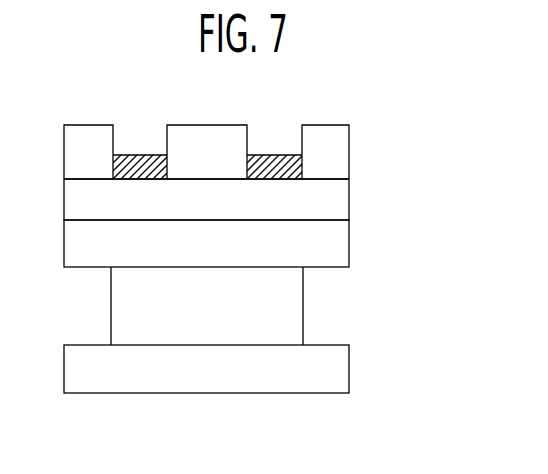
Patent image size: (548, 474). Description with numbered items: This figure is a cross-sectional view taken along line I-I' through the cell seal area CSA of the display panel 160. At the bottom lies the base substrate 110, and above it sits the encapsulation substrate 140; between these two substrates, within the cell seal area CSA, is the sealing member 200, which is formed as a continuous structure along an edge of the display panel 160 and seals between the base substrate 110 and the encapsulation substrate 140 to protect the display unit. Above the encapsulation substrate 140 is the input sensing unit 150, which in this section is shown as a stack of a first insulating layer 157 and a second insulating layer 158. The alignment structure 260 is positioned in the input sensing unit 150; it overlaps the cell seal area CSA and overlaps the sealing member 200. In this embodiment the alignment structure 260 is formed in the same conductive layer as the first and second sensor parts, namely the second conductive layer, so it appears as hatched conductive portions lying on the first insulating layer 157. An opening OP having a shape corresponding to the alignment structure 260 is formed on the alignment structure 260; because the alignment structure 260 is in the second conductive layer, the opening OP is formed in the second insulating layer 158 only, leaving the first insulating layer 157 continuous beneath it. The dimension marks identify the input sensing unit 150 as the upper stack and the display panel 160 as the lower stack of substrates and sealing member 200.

The base substrate 110 is at (349, 363).
The encapsulation substrate 140 is at (349, 251).
The input sensing unit 150 is at (443, 125).
The first insulating layer 157 is at (349, 199).
The second insulating layer 158 is at (349, 148).
The display panel 160 is at (458, 221).
The sealing member 200 is at (300, 307).
The alignment structure 260 is at (153, 160).
The opening OP is at (275, 133).
The cell seal area CSA is at (349, 437).